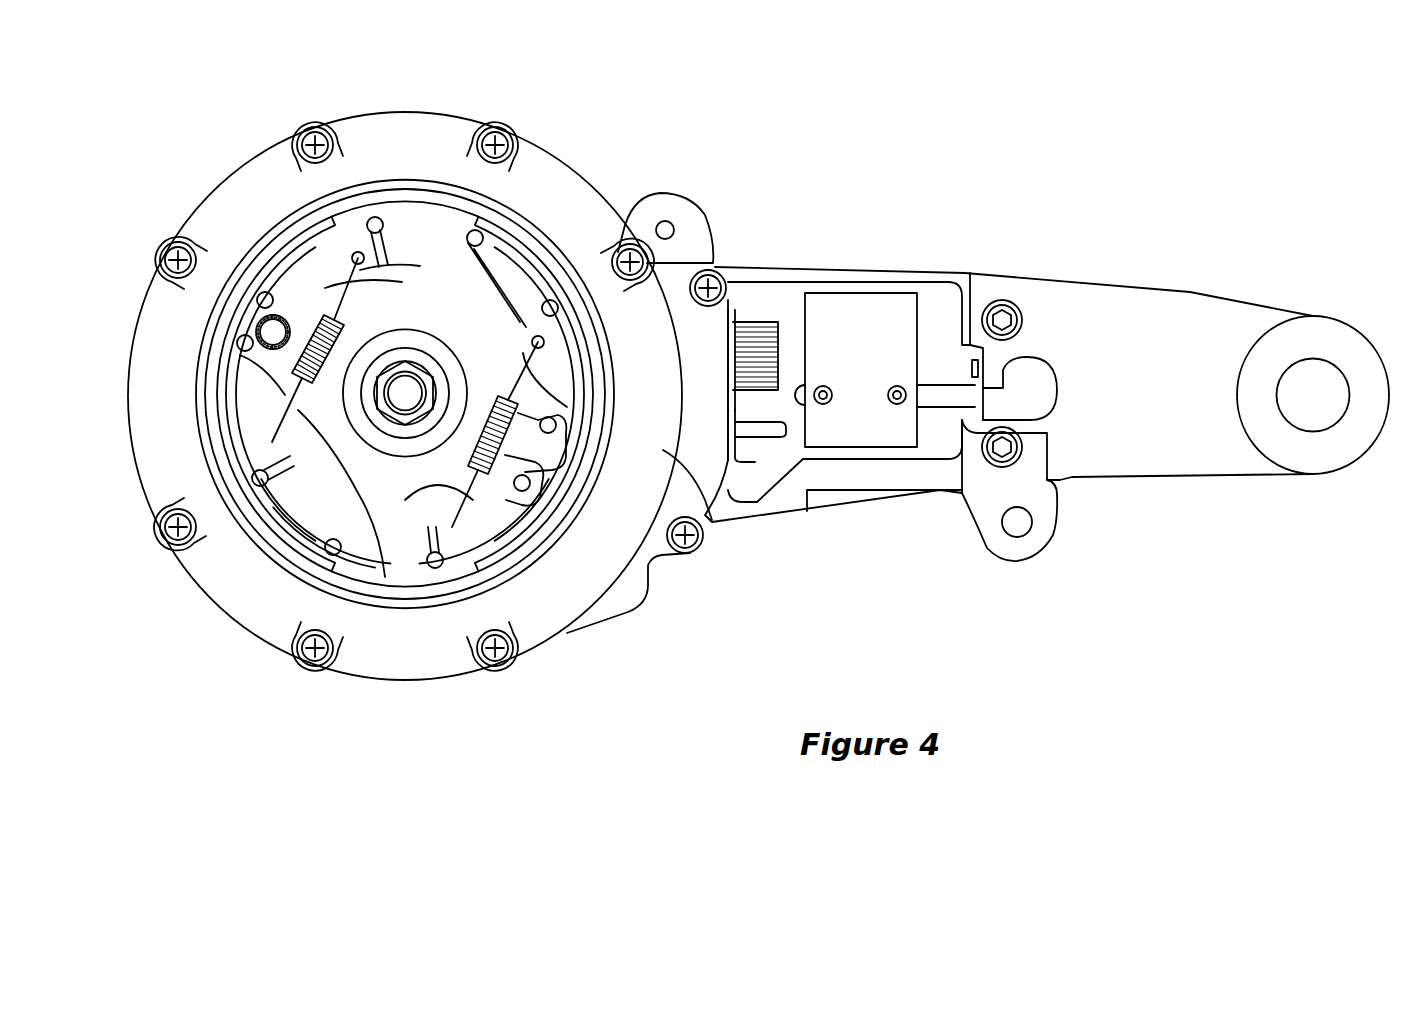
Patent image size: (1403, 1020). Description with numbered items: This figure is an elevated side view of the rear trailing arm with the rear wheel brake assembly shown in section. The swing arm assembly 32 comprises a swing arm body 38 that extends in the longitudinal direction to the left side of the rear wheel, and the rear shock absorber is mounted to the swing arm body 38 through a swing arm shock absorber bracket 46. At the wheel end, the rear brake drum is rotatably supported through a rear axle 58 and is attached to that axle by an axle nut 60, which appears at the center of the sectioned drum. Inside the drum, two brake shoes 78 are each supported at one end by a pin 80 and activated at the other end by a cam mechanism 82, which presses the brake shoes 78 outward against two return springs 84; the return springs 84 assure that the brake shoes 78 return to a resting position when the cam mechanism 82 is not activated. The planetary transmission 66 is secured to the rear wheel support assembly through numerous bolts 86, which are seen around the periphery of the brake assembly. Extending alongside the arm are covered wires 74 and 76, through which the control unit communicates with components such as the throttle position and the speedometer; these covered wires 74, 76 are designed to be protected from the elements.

The swing arm assembly 32 is at (1189, 288).
The swing arm body 38 is at (1175, 445).
The swing arm shock absorber bracket 46 is at (1030, 545).
The rear axle 58 is at (405, 388).
The axle nut 60 is at (414, 384).
The planetary transmission 66 is at (662, 450).
The covered wire 74 is at (756, 388).
The covered wire 76 is at (768, 440).
The brake shoes 78 is at (455, 240).
The pin 80 is at (273, 332).
The cam mechanism 82 is at (523, 450).
The return springs 84 is at (345, 440).
The bolts 86 is at (300, 143).